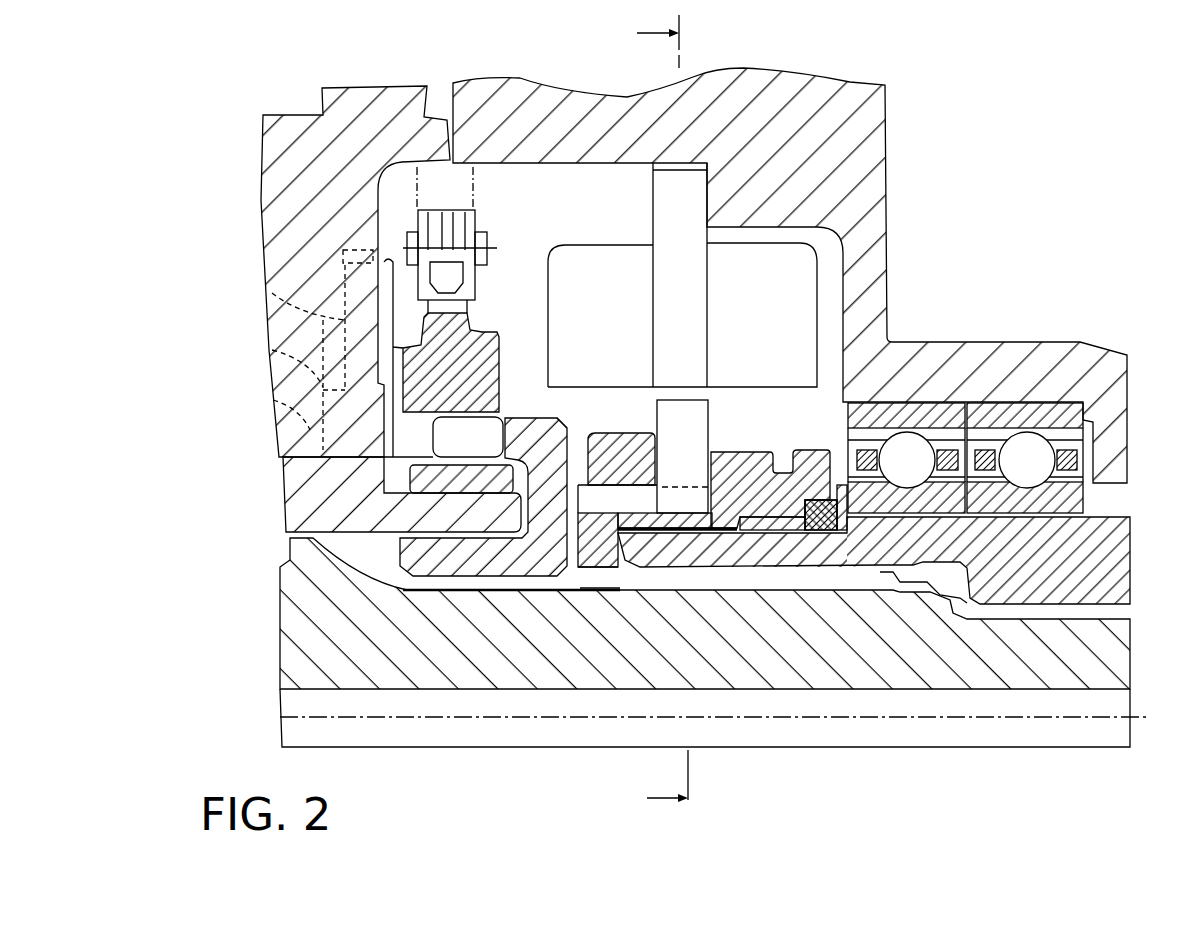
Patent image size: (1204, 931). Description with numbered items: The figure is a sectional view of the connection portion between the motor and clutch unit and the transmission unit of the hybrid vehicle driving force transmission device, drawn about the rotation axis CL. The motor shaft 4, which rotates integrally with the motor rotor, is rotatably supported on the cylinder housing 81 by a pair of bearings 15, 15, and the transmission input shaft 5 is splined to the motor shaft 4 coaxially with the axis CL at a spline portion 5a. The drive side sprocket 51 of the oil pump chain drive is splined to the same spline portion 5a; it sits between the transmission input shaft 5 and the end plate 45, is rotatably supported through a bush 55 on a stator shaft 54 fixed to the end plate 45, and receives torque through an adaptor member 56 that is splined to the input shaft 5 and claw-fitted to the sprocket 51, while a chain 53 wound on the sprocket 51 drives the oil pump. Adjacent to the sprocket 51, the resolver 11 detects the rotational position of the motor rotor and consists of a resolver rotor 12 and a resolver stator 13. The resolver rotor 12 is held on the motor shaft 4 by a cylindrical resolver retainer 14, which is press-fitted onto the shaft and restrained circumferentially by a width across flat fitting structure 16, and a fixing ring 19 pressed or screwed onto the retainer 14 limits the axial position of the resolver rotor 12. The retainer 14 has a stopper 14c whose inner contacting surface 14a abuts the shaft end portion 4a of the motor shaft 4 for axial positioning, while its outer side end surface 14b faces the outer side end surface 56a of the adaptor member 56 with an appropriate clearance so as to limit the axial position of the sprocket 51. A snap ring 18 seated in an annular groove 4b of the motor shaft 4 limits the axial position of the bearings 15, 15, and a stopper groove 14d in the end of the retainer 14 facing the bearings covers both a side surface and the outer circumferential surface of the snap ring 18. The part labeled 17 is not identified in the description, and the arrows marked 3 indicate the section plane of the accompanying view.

The motor shaft 4 is at (1095, 577).
The shaft end portion 4a is at (600, 583).
The annular groove 4b is at (862, 568).
The transmission input shaft 5 is at (875, 643).
The spline portion 5a is at (594, 586).
The resolver 11 is at (824, 306).
The resolver rotor 12 is at (683, 462).
The resolver stator 13 is at (675, 230).
The resolver retainer 14 is at (746, 446).
The inner contacting surface 14a is at (628, 522).
The outer side end surface 14b is at (597, 545).
The stopper 14c is at (580, 566).
The stopper groove 14d is at (806, 505).
The bearings 15 is at (940, 418).
The width across flat fitting structure 16 is at (687, 531).
The spacer ring 17 is at (762, 518).
The snap ring 18 is at (810, 531).
The fixing ring 19 is at (637, 458).
The end plate 45 is at (320, 173).
The drive side sprocket 51 is at (442, 378).
The chain 53 is at (477, 193).
The stator shaft 54 is at (318, 491).
The bush 55 is at (435, 477).
The adaptor member 56 is at (449, 555).
The outer side end surface 56a is at (577, 445).
The cylinder housing 81 is at (848, 170).
The rotation axis CL is at (820, 711).
The section line for FIG. 3 is at (662, 421).